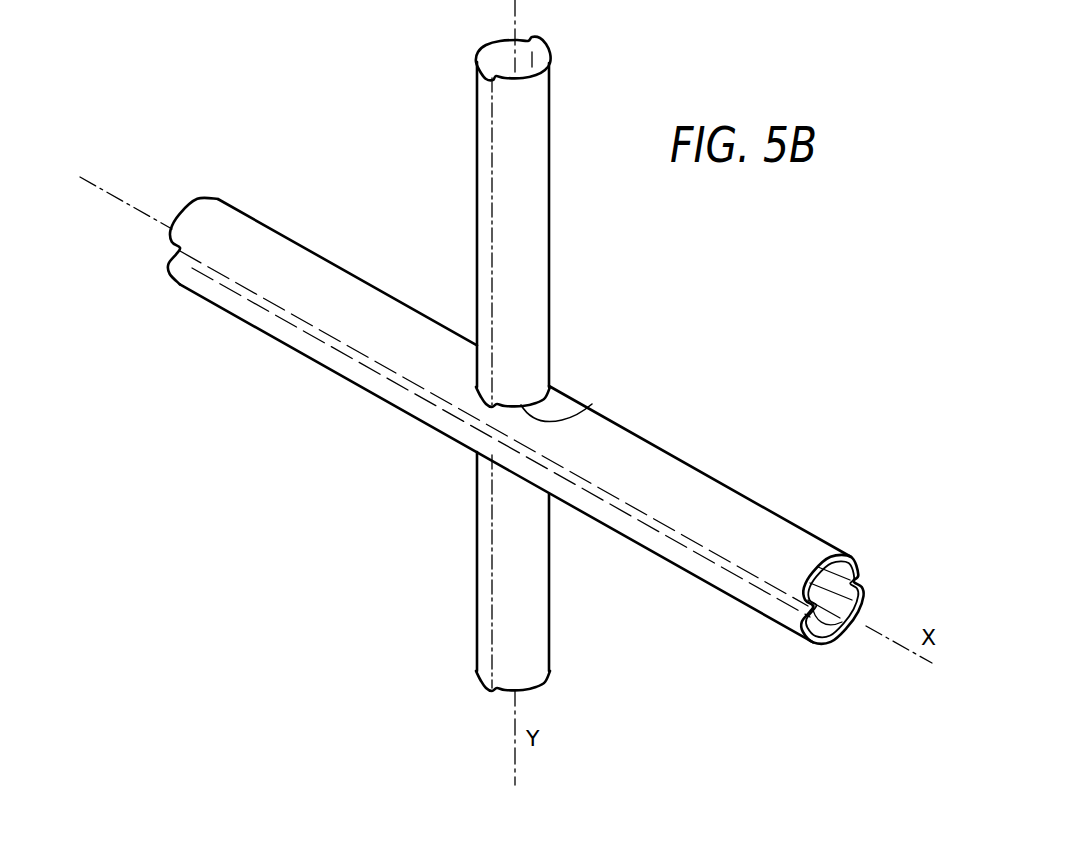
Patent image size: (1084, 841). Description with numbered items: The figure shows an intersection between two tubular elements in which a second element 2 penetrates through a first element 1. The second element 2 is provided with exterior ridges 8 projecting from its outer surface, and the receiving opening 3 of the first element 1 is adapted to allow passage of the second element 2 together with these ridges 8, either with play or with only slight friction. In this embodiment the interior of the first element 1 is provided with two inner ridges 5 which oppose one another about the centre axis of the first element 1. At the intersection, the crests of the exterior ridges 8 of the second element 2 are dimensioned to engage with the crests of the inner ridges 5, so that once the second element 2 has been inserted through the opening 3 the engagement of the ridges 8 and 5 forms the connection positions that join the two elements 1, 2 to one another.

The first element 1 is at (726, 506).
The second element 2 is at (537, 258).
The receiving opening 3 is at (592, 404).
The inner ridge 5 is at (842, 637).
The exterior ridge 8 is at (477, 146).